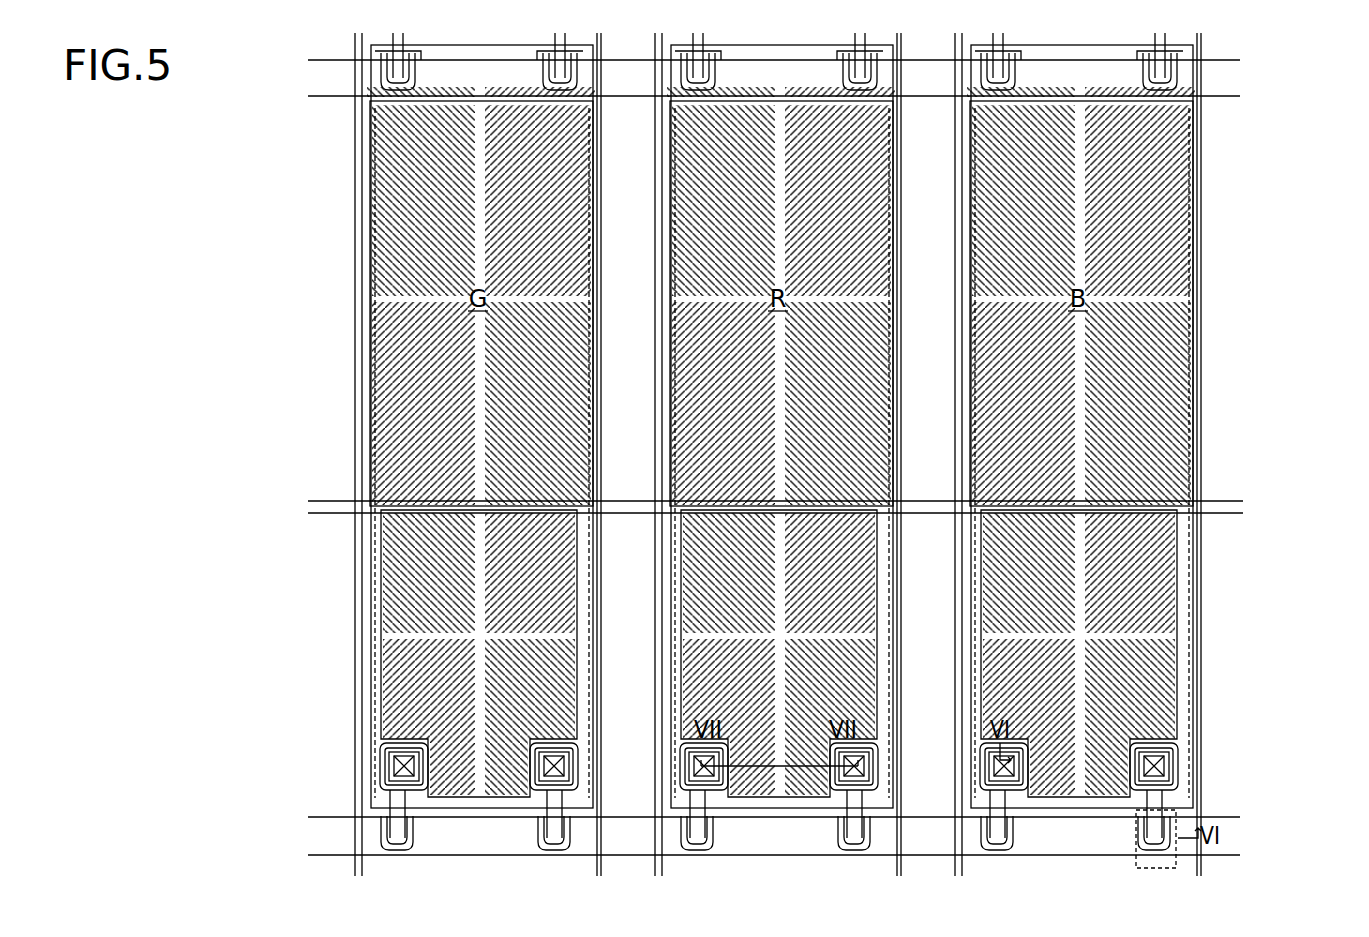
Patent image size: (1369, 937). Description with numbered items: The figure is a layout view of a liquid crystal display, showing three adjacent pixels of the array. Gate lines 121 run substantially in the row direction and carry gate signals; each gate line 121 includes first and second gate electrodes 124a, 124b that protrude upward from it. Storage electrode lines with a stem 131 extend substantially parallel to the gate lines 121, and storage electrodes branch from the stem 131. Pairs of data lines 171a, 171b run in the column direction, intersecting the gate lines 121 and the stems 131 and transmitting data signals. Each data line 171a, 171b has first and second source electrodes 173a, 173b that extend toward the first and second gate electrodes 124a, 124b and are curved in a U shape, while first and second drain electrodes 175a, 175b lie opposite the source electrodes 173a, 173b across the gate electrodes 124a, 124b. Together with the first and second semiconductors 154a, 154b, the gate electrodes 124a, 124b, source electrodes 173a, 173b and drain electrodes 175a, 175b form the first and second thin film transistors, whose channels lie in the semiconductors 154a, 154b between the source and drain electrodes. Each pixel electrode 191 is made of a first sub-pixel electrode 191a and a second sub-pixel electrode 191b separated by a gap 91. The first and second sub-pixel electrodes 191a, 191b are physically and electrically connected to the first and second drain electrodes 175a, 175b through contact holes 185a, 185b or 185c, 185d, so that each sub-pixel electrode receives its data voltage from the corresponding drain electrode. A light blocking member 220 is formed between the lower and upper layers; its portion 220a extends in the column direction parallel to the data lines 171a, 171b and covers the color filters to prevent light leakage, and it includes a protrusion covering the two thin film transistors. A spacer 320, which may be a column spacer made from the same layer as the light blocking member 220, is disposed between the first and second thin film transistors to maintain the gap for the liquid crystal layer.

The gate line 121 is at (1234, 824).
The first gate electrode 124a is at (1181, 854).
The second gate electrode 124b is at (1015, 858).
The storage electrode line stem 131 is at (1212, 493).
The first semiconductor 154a is at (1202, 854).
The second semiconductor 154b is at (993, 858).
The first data line 171a is at (1190, 666).
The second data line 171b is at (347, 648).
The first source electrode 173a is at (1202, 854).
The second source electrode 173b is at (992, 815).
The first drain electrode 175a is at (1162, 792).
The second drain electrode 175b is at (386, 797).
The contact hole 185a is at (1165, 758).
The contact hole 185b is at (974, 786).
The contact hole 185c is at (856, 846).
The contact hole 185d is at (690, 846).
The pixel electrode 191 is at (1164, 442).
The first sub-pixel electrode 191a is at (1156, 568).
The second sub-pixel electrode 191b is at (1182, 290).
The light blocking member 220 is at (1133, 557).
The light blocking member 220a is at (1229, 497).
The gap 91 is at (372, 578).
The spacer 320 is at (1168, 856).